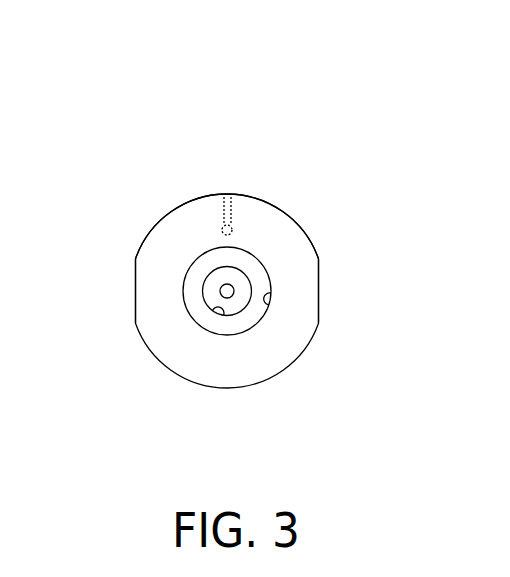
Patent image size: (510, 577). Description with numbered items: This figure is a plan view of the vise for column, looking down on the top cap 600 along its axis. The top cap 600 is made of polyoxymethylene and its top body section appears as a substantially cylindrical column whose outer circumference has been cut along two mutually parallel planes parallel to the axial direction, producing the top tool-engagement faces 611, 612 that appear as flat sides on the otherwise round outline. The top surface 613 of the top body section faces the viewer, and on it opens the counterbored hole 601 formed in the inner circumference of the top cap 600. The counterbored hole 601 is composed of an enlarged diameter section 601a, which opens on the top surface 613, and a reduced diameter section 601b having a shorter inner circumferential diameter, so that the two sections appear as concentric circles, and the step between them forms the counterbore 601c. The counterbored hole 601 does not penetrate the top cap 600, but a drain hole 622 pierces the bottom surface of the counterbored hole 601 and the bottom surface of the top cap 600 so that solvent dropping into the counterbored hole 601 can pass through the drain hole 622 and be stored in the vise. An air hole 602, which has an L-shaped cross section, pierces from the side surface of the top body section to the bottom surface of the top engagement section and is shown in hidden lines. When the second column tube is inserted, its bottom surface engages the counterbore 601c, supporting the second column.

The top cap 600 is at (274, 193).
The counterbored hole 601 is at (228, 262).
The enlarged diameter section 601a is at (272, 304).
The reduced diameter section 601b is at (230, 298).
The counterbore 601c is at (205, 316).
The air hole 602 is at (226, 197).
The top tool-engagement face 611 is at (318, 266).
The top tool-engagement face 612 is at (136, 283).
The top surface 613 is at (190, 223).
The drain hole 622 is at (231, 300).